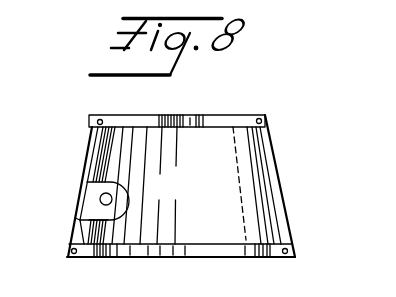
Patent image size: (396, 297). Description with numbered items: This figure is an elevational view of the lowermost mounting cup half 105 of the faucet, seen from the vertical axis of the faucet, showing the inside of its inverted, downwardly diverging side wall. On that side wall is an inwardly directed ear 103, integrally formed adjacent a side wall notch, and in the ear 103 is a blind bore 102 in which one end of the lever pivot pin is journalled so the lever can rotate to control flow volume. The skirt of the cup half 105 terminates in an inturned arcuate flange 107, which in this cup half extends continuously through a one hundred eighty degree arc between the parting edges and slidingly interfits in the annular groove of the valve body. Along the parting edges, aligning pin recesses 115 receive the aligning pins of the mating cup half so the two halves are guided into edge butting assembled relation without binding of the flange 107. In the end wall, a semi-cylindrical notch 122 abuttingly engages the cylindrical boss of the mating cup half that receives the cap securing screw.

The blind bore 102 is at (95, 197).
The ear 103 is at (124, 191).
The cup half 105 is at (270, 126).
The inturned arcuate flange 107 is at (112, 250).
The aligning pin recess 115 is at (97, 118).
The semi-cylindrical notch 122 is at (190, 117).